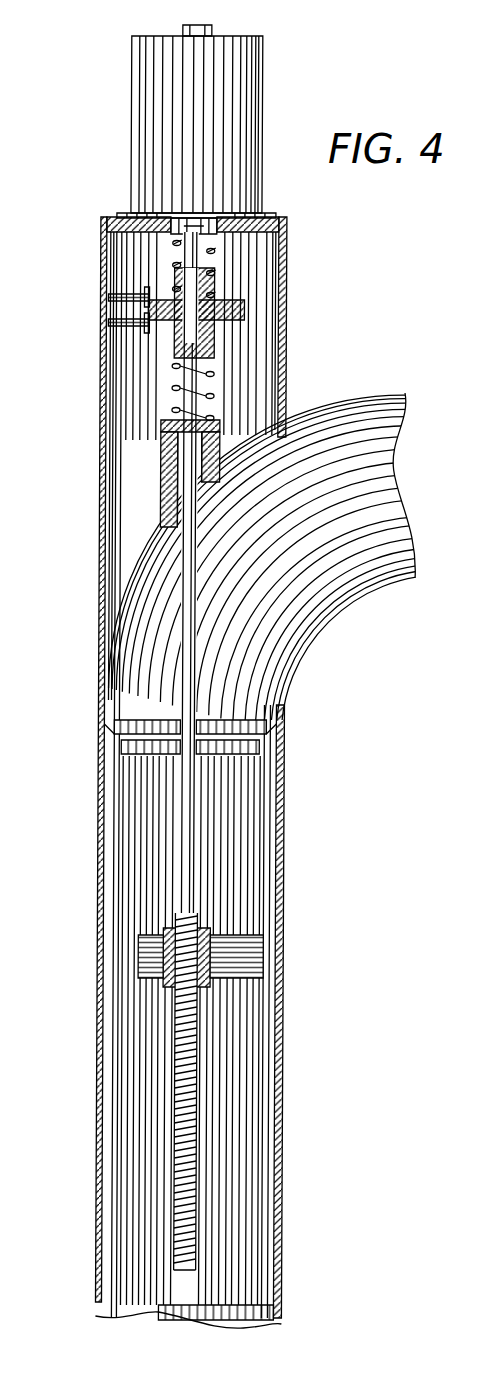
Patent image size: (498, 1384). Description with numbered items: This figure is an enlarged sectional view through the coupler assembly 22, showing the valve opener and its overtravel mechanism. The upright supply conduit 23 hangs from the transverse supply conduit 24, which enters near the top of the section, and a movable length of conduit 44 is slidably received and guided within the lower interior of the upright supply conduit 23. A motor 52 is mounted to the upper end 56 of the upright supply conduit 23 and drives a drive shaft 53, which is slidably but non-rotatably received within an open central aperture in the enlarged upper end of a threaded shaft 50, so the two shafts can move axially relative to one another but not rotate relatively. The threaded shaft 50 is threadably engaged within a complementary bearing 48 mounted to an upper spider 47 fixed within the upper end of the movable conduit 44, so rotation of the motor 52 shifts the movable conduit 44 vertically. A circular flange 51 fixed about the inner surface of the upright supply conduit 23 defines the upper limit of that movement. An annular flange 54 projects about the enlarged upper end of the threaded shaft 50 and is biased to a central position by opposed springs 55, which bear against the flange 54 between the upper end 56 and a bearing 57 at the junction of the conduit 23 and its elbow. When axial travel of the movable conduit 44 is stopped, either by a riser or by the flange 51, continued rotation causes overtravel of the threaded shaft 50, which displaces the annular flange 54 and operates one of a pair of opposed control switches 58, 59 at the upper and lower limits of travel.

The coupler assembly 22 is at (288, 795).
The upright supply conduit 23 is at (284, 972).
The transverse supply conduit 24 is at (393, 480).
The movable length of conduit 44 is at (257, 1262).
The upper spider 47 is at (258, 948).
The bearing 48 is at (210, 988).
The threaded shaft 50 is at (199, 880).
The circular flange 51 is at (284, 724).
The motor 52 is at (262, 200).
The drive shaft 53 is at (154, 220).
The annular flange 54 is at (238, 308).
The springs 55 is at (216, 262).
The upper end 56 is at (285, 236).
The bearing 57 is at (178, 430).
The control switch 58 is at (108, 306).
The control switch 59 is at (108, 326).